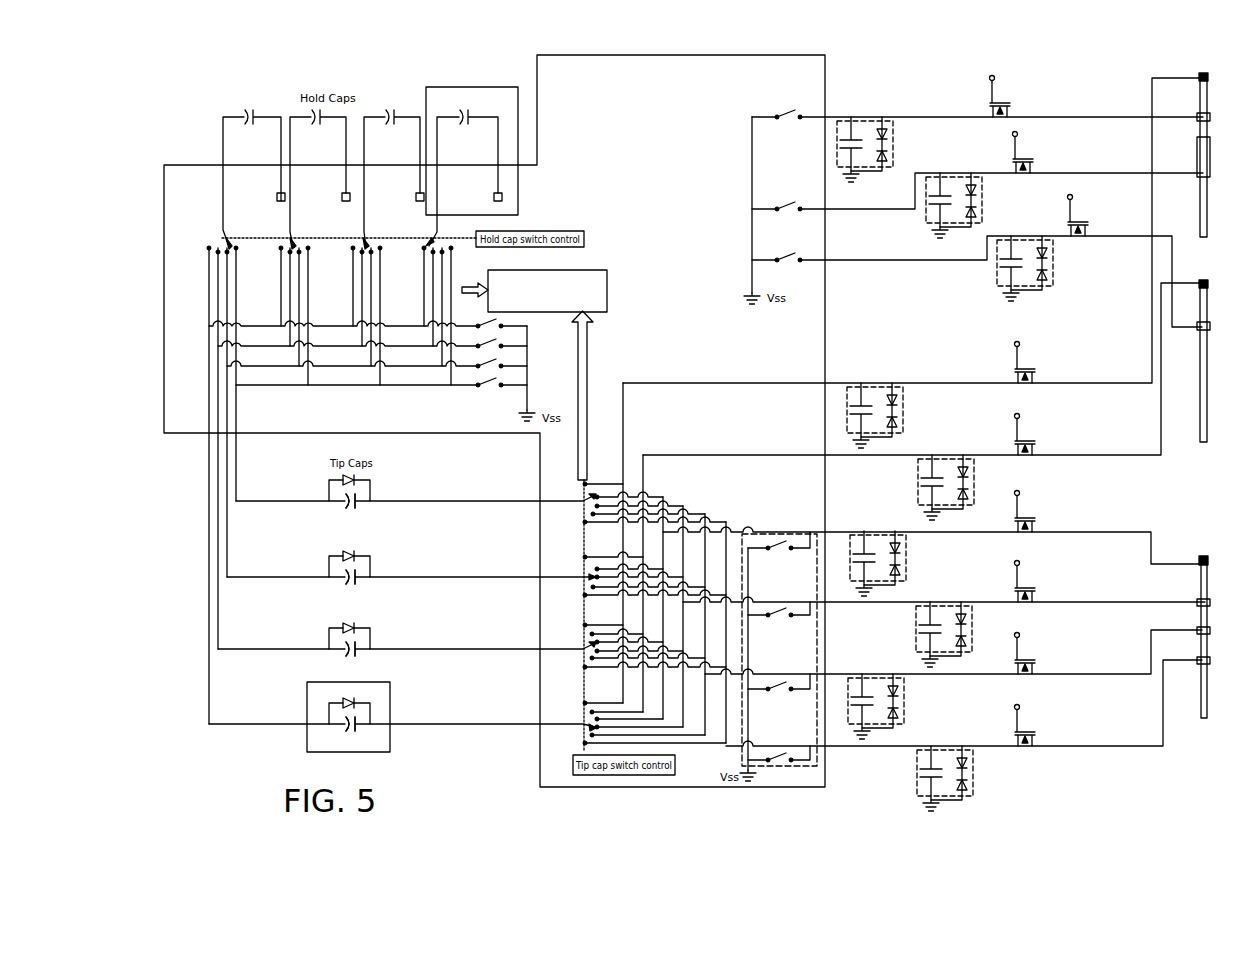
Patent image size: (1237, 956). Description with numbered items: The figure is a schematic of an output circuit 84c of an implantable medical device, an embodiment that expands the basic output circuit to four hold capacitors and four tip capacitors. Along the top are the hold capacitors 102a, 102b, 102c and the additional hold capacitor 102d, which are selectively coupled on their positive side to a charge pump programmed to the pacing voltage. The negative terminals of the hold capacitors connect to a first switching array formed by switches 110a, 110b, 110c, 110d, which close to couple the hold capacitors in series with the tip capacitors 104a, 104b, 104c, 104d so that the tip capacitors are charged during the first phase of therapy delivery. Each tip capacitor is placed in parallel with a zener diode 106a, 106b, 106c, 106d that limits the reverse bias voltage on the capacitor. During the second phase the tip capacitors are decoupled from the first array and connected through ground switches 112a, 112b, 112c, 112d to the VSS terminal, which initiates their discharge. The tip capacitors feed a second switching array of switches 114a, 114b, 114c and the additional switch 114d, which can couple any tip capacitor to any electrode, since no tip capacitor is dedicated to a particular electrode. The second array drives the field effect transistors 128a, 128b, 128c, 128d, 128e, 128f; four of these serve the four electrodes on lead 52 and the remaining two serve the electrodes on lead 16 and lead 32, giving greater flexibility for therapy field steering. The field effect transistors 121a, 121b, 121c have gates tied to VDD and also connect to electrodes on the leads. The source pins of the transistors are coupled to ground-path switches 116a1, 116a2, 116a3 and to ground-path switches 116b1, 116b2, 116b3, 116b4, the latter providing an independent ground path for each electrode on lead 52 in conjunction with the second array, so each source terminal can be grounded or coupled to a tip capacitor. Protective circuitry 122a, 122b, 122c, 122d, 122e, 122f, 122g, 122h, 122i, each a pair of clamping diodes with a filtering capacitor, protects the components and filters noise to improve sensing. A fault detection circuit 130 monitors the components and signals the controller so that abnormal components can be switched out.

The output circuit 84c is at (643, 819).
The hold capacitor 102a is at (254, 179).
The hold capacitor 102b is at (320, 179).
The hold capacitor 102c is at (393, 179).
The additional hold capacitor 102d is at (472, 166).
The tip capacitor 104a is at (368, 509).
The tip capacitor 104b is at (368, 585).
The tip capacitor 104c is at (367, 657).
The additional tip capacitor 104d is at (368, 732).
The zener diode 106a is at (416, 491).
The zener diode 106b is at (411, 567).
The zener diode 106c is at (407, 639).
The zener diode 106d is at (402, 717).
The switch 110a is at (241, 485).
The switch 110b is at (313, 315).
The switch 110c is at (384, 315).
The switch 110d is at (455, 315).
The ground switch 112a is at (368, 320).
The ground switch 112b is at (372, 340).
The ground switch 112c is at (377, 360).
The ground switch 112d is at (381, 379).
The switch 114a is at (637, 516).
The switch 114b is at (637, 585).
The switch 114c is at (637, 653).
The additional switch 114d is at (637, 724).
The ground-path switch 116a1 is at (977, 105).
The ground-path switch 116a2 is at (977, 192).
The ground-path switch 116a3 is at (977, 281).
The ground-path switch 116b1 is at (779, 553).
The ground-path switch 116b2 is at (779, 621).
The ground-path switch 116b3 is at (779, 694).
The ground-path switch 116b4 is at (779, 767).
The field effect transistor 121a is at (1002, 94).
The field effect transistor 121b is at (1026, 153).
The field effect transistor 121c is at (1081, 213).
The protective circuitry 122a is at (882, 159).
The protective circuitry 122b is at (974, 215).
The protective circuitry 122c is at (1043, 278).
The protective circuitry 122d is at (884, 416).
The protective circuitry 122e is at (955, 490).
The protective circuitry 122f is at (887, 566).
The protective circuitry 122g is at (953, 637).
The protective circuitry 122h is at (888, 709).
The protective circuitry 122i is at (961, 783).
The field effect transistor 128a is at (913, 230).
The field effect transistor 128b is at (923, 369).
The field effect transistor 128c is at (932, 528).
The field effect transistor 128d is at (944, 582).
The field effect transistor 128e is at (953, 652).
The field effect transistor 128f is at (964, 703).
The fault detection circuit 130 is at (560, 270).
The lead 32 is at (1215, 155).
The lead 16 is at (1215, 361).
The lead 52 is at (1215, 637).